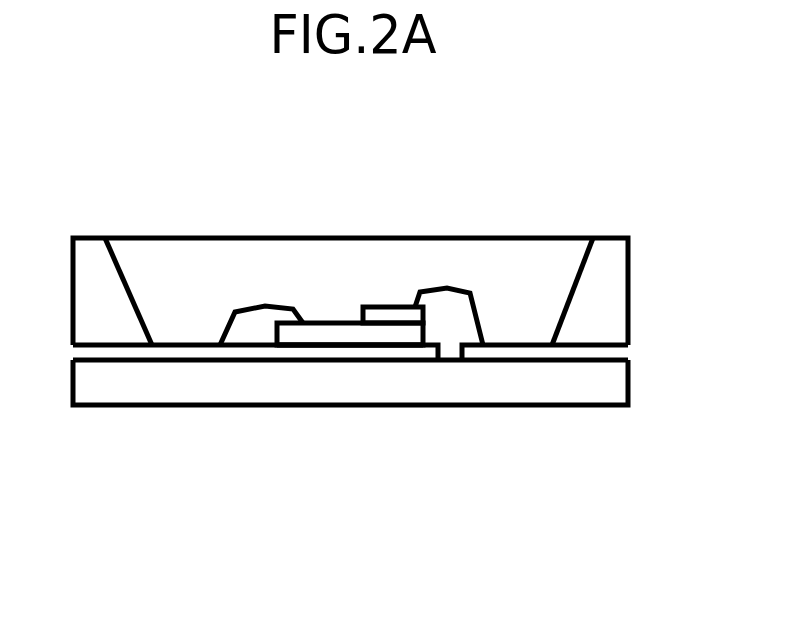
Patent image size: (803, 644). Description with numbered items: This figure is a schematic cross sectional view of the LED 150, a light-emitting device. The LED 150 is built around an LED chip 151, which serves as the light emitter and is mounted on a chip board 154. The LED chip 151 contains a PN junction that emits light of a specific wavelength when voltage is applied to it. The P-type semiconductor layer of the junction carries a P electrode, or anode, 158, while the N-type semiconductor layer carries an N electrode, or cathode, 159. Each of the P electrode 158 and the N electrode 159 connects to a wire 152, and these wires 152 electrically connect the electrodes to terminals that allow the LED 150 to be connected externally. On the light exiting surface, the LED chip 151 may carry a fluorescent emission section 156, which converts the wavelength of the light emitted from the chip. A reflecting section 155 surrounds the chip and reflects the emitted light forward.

The LED 150 is at (360, 398).
The LED chip 151 is at (330, 335).
The wire 152 is at (227, 307).
The chip board 154 is at (280, 352).
The reflecting section 155 is at (122, 257).
The fluorescent emission section 156 is at (175, 280).
The P electrode (anode) 158 is at (378, 318).
The N electrode (cathode) 159 is at (292, 335).